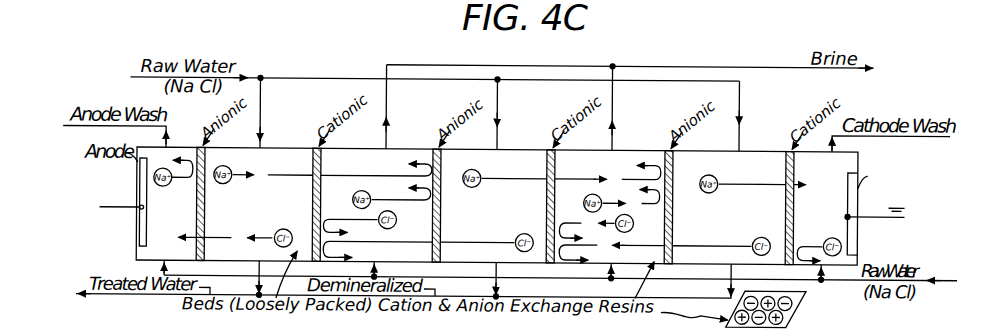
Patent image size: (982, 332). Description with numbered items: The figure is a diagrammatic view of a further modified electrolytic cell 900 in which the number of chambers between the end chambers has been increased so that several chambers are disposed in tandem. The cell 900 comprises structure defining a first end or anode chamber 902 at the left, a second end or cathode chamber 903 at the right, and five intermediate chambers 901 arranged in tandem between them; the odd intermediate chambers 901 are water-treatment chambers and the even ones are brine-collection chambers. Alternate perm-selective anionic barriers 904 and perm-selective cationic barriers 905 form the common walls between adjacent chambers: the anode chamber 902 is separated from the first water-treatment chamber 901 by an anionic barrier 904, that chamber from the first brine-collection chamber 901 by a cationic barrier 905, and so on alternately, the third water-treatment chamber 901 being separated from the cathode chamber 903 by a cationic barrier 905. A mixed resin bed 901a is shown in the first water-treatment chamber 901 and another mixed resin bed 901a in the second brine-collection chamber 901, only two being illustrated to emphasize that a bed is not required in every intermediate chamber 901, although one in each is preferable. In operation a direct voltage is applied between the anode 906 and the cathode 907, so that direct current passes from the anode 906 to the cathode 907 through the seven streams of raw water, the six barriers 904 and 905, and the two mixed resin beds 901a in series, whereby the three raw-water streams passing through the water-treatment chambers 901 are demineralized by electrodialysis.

The electrolytic cell 900 is at (313, 117).
The intermediate chambers 901 is at (277, 222).
The mixed resin bed 901a is at (271, 257).
The anode chamber 902 is at (184, 216).
The cathode chamber 903 is at (833, 214).
The perm-selective anionic barrier 904 is at (205, 216).
The perm-selective cationic barrier 905 is at (313, 209).
The anode 906 is at (138, 190).
The cathode 907 is at (860, 223).